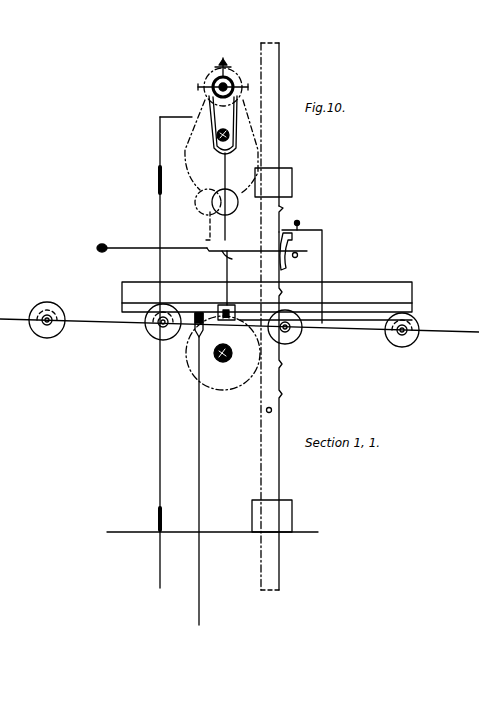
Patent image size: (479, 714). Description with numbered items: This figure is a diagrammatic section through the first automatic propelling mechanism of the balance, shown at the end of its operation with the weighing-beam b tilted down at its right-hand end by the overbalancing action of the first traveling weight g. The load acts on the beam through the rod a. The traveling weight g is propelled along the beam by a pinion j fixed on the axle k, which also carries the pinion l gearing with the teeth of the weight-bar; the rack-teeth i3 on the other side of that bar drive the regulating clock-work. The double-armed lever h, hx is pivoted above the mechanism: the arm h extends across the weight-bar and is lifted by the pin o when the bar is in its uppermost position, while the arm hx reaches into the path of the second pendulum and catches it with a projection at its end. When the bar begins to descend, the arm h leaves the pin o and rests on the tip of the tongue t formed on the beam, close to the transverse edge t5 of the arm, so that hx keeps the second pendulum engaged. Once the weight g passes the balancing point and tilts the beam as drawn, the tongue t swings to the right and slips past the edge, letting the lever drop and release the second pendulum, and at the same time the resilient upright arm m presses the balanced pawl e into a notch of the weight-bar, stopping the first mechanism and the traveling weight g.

The pinion l is at (212, 316).
The lever arm h is at (220, 172).
The lever arm hx is at (197, 226).
The rack-teeth i3 is at (284, 213).
The upright arm m is at (311, 272).
The pawl e is at (289, 255).
The traveling weight g is at (267, 294).
The weighing-beam b is at (239, 328).
The tongue t is at (227, 285).
The trip rod spring t5 is at (221, 263).
The axle k is at (230, 353).
The pinion j is at (223, 361).
The rod a is at (202, 469).
The pin o is at (266, 410).